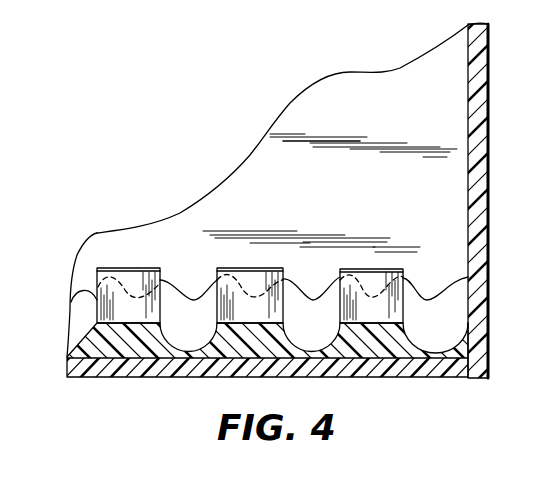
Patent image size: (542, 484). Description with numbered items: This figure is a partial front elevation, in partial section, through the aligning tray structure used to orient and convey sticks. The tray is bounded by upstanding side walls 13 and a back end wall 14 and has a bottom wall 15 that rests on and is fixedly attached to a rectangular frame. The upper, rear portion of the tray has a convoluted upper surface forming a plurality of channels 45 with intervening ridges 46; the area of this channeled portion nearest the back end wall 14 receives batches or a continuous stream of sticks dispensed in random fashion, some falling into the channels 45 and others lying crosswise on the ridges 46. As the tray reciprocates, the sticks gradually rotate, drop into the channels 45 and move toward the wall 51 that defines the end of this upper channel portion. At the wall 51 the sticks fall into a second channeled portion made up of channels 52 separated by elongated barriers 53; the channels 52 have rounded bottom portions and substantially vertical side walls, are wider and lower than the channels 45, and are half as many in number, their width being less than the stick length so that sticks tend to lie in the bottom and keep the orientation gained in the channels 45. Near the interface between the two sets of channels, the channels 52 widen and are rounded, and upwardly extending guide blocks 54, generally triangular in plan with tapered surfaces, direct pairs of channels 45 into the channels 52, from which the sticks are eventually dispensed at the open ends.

The side walls 13 is at (488, 121).
The back end wall 14 is at (388, 113).
The bottom wall 15 is at (175, 378).
The channels 45 is at (145, 300).
The ridges 46 is at (293, 270).
The wall 51 is at (85, 312).
The channels 52 is at (436, 356).
The elongated barriers 53 is at (163, 340).
The guide blocks 54 is at (243, 268).